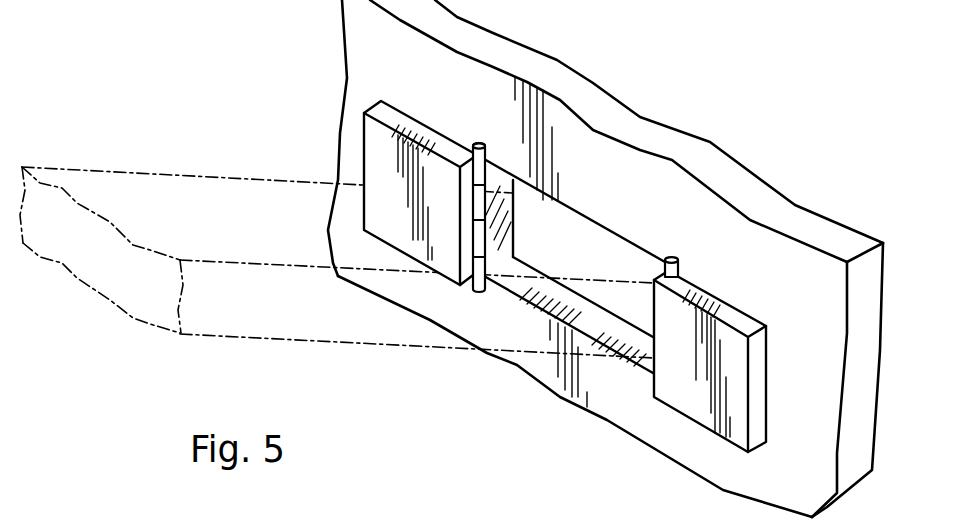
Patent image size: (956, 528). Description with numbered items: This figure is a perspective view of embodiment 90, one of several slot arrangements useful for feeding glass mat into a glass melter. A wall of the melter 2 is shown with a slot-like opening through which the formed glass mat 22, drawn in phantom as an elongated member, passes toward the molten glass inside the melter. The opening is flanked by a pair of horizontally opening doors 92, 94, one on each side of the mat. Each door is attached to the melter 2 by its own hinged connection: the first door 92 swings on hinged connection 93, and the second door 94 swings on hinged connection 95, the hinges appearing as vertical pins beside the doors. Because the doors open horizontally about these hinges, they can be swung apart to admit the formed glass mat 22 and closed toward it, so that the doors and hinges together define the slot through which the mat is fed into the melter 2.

The melter 2 is at (358, 80).
The embodiment 90 is at (280, 53).
The formed glass mat 22 is at (172, 175).
The horizontally opening door 92 is at (387, 110).
The hinged connection 93 is at (486, 152).
The horizontally opening door 94 is at (730, 312).
The hinged connection 95 is at (678, 261).